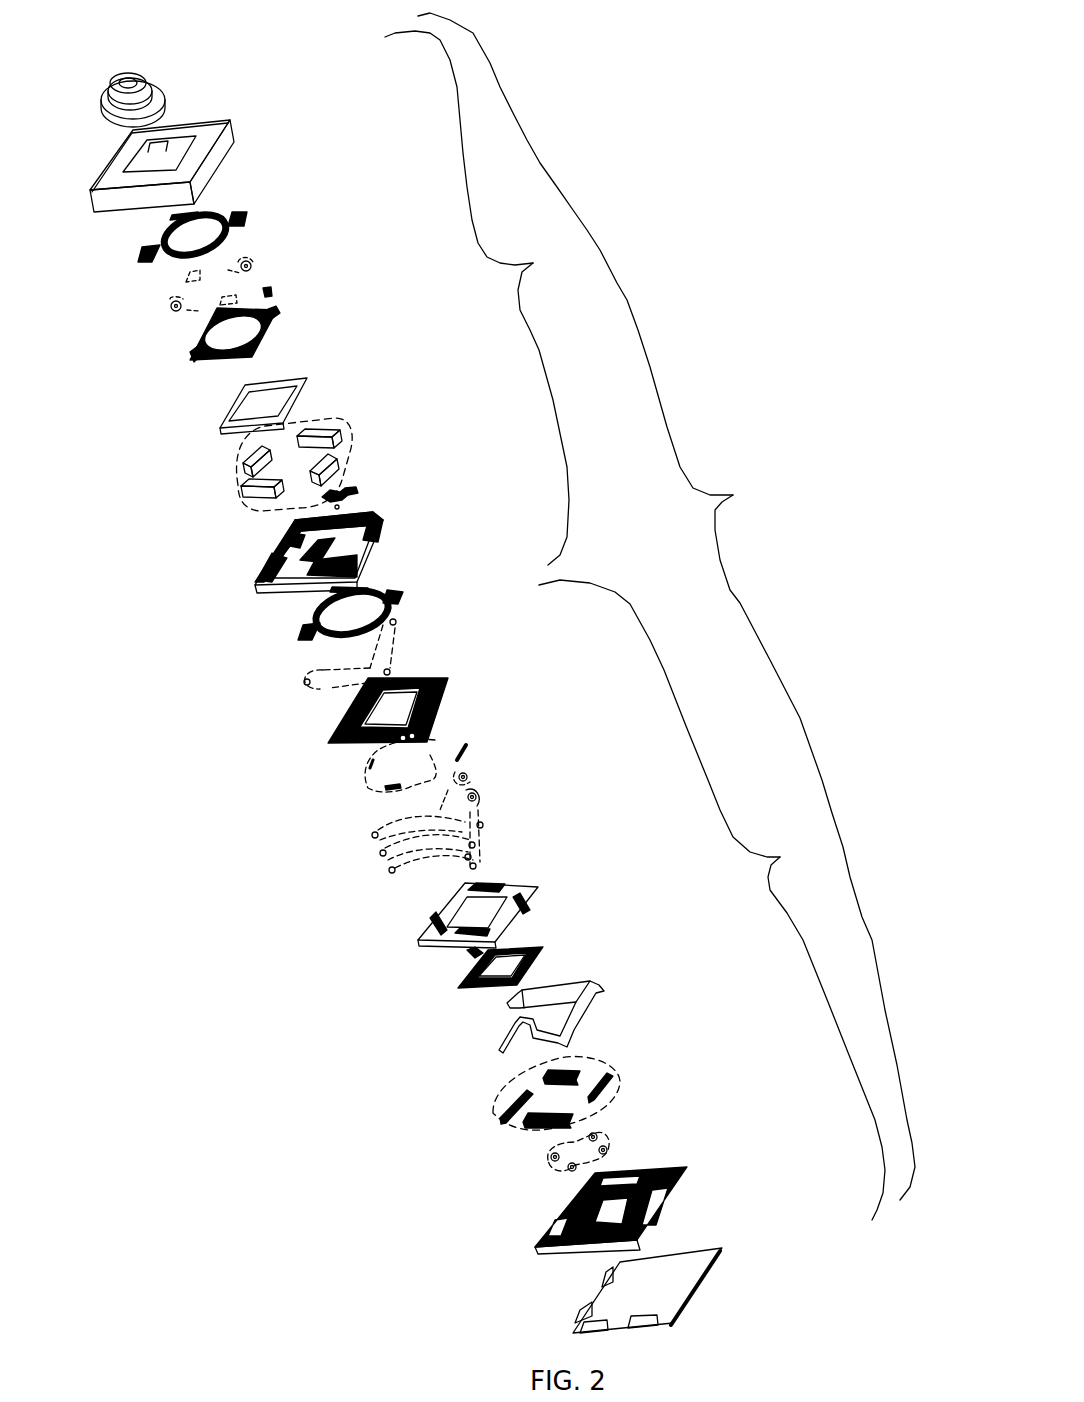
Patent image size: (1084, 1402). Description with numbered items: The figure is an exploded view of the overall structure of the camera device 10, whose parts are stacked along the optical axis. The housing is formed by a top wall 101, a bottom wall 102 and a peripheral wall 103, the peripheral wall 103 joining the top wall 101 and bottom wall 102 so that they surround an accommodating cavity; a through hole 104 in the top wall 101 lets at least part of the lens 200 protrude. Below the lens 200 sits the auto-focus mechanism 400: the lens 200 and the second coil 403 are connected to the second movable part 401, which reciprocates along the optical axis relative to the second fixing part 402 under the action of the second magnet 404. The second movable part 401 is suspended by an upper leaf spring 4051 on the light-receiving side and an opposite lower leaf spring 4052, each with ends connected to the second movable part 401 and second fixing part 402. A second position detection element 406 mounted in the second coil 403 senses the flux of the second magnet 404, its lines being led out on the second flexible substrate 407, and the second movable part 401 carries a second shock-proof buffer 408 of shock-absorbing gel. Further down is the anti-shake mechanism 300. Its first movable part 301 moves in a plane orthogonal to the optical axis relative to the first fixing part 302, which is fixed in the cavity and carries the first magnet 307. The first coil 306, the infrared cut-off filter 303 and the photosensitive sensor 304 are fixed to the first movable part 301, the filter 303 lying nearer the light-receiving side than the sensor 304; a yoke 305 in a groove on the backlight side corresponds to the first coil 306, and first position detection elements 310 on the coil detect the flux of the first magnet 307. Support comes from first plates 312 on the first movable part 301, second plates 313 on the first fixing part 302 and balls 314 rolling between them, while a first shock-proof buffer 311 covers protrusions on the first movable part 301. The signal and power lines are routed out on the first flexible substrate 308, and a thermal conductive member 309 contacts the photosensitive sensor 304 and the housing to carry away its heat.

The camera device 10 is at (666, 606).
The top wall 101 is at (223, 123).
The bottom wall 102 is at (722, 1245).
The peripheral wall 103 is at (203, 187).
The through hole 104 is at (190, 138).
The lens 200 is at (165, 93).
The anti-shake mechanism 300 is at (712, 900).
The first movable part 301 is at (447, 680).
The first fixing part 302 is at (685, 1167).
The filter 303 is at (505, 950).
The photosensitive sensor 304 is at (533, 970).
The yoke 305 is at (443, 740).
The first coil 306 is at (533, 883).
The first magnet 307 is at (587, 1067).
The first flexible substrate 308 is at (582, 1007).
The thermal conductive member 309 is at (608, 1142).
The first position detection element 310 is at (447, 893).
The first shock-proof buffer 311 is at (398, 622).
The first plate 312 is at (467, 778).
The second plate 313 is at (487, 823).
The ball 314 is at (480, 797).
The auto-focus mechanism 400 is at (487, 298).
The second movable part 401 is at (275, 332).
The second fixing part 402 is at (388, 522).
The second coil 403 is at (307, 380).
The second magnet 404 is at (340, 432).
The upper leaf spring 4051 is at (233, 217).
The lower leaf spring 4052 is at (402, 587).
The second position detection element 406 is at (270, 292).
The second flexible substrate 407 is at (363, 487).
The second shock-proof buffer 408 is at (250, 263).